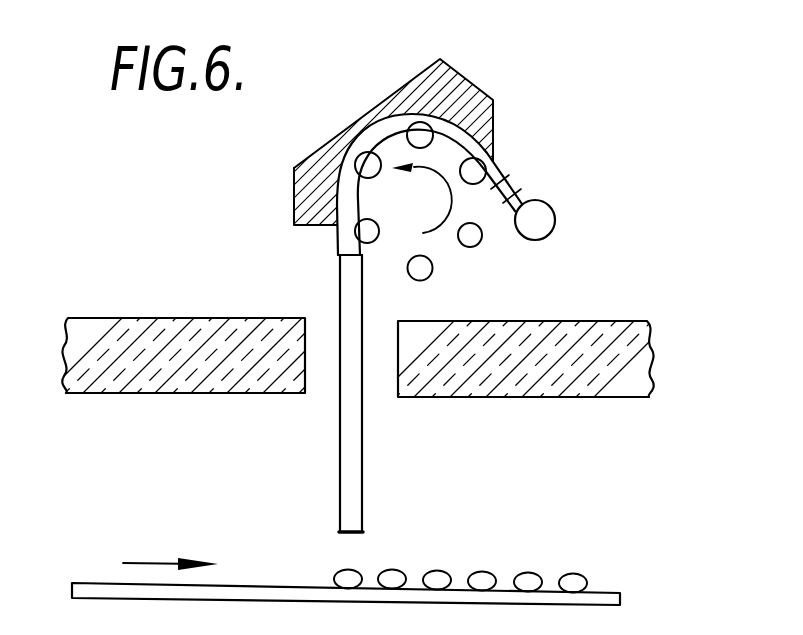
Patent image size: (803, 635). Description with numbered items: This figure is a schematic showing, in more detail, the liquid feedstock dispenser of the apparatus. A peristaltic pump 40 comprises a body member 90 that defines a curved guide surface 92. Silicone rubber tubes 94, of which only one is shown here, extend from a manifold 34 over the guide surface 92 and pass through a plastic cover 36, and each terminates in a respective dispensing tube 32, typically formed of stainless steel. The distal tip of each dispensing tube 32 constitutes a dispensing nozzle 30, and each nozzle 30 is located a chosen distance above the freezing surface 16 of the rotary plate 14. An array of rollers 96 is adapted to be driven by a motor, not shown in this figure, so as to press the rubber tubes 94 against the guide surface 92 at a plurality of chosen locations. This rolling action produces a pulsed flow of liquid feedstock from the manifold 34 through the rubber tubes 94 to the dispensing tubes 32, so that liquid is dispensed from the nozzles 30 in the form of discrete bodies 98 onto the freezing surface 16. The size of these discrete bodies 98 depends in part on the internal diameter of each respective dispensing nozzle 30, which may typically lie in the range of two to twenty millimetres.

The rotary plate 14 is at (546, 605).
The freezing surface 16 is at (112, 583).
The dispensing nozzle 30 is at (345, 542).
The dispensing tube 32 is at (340, 412).
The manifold 34 is at (566, 213).
The plastic cover 36 is at (540, 330).
The peristaltic pump 40 is at (480, 81).
The body member 90 is at (378, 158).
The curved guide surface 92 is at (363, 127).
The silicone rubber tube 94 is at (347, 201).
The rollers 96 is at (482, 177).
The discrete bodies 98 is at (523, 571).